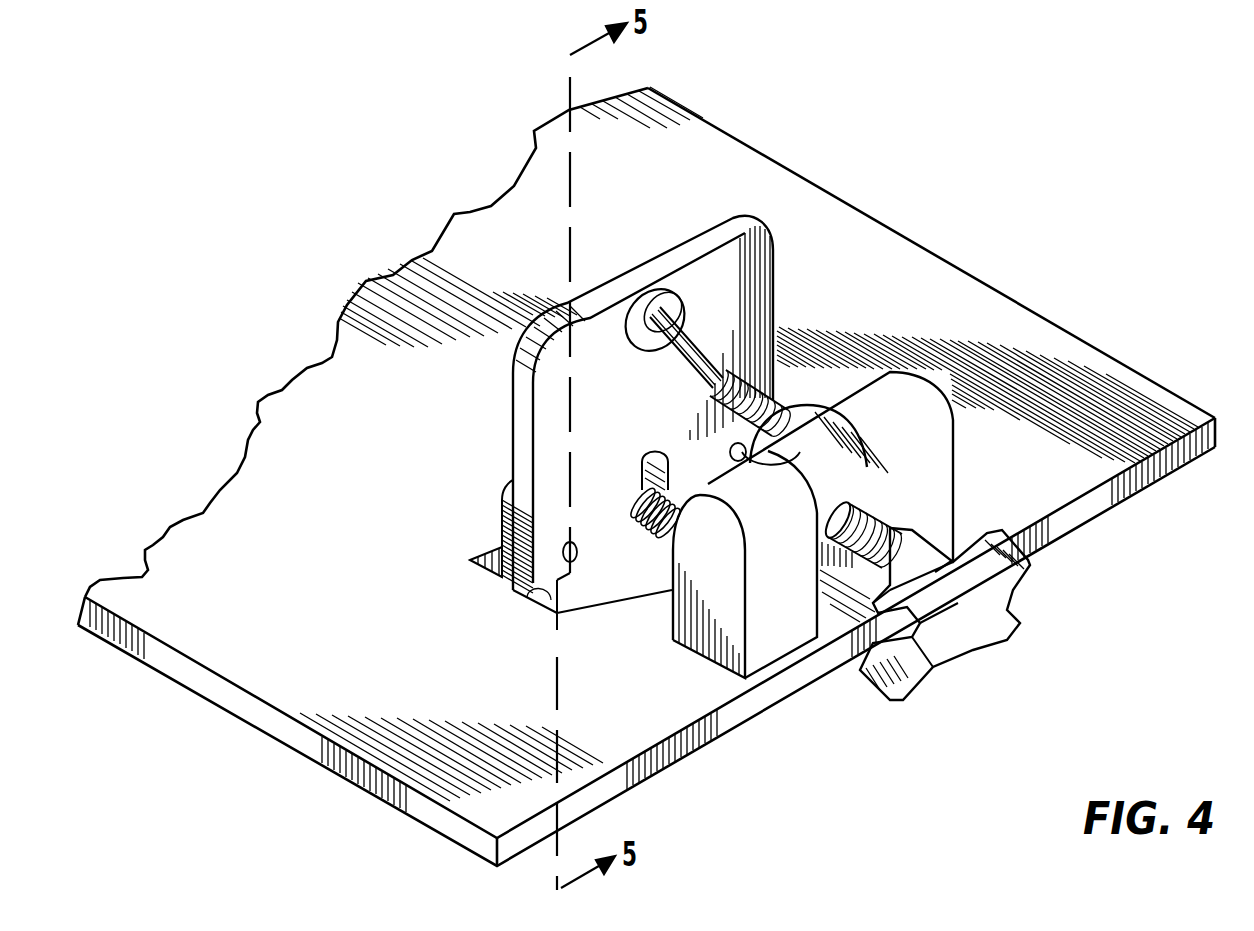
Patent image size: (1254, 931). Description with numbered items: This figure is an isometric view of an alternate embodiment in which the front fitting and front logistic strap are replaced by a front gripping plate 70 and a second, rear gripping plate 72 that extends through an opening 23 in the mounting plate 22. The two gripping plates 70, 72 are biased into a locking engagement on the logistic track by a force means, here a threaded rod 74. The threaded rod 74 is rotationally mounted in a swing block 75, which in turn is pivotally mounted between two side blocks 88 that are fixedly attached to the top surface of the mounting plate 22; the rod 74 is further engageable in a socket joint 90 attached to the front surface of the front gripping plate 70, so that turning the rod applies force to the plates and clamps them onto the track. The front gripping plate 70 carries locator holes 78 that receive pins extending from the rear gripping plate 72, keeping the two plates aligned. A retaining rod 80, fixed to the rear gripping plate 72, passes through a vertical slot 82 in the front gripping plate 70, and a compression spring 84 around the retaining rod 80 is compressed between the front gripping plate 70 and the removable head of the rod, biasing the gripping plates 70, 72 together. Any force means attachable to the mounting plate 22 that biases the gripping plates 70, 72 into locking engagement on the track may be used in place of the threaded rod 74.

The mounting plate 22 is at (270, 594).
The opening 23 is at (502, 592).
The front gripping plate 70 is at (717, 290).
The second gripping plate 72 is at (497, 530).
The threaded rod 74 is at (762, 392).
The swing block 75 is at (857, 438).
The locator holes 78 is at (780, 430).
The retaining rod 80 is at (655, 500).
The vertical slot 82 is at (648, 468).
The compression spring 84 is at (640, 494).
The side blocks 88 is at (927, 478).
The socket joint 90 is at (663, 292).